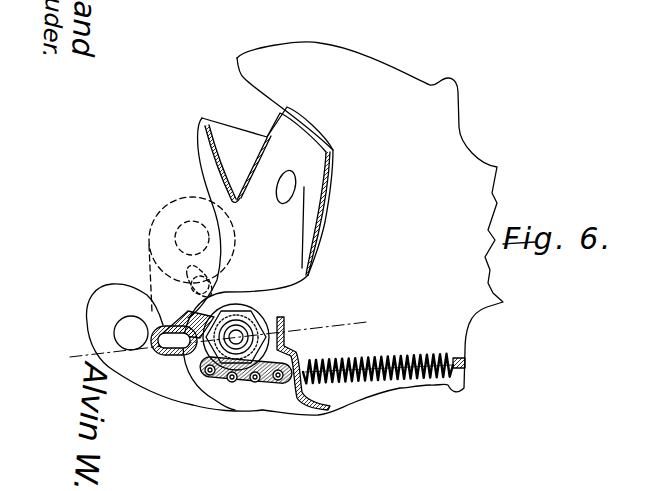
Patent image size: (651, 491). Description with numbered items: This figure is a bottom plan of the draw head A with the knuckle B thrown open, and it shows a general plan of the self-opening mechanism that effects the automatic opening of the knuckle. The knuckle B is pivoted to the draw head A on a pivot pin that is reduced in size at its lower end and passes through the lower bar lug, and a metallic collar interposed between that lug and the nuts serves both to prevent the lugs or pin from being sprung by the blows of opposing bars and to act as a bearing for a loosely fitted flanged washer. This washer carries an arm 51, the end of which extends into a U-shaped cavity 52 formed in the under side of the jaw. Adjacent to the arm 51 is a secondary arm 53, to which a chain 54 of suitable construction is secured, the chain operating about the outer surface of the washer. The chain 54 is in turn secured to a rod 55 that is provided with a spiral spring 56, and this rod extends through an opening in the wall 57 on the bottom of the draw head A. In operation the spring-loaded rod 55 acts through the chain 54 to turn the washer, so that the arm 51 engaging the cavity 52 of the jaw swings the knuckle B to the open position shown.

The draw head A is at (370, 228).
The knuckle B is at (173, 398).
The arm of flanged washer 51 is at (178, 341).
The U-shaped cavity 52 is at (157, 351).
The secondary arm 53 is at (215, 377).
The chain 54 is at (247, 392).
The rod 55 is at (464, 360).
The spiral spring 56 is at (428, 378).
The wall 57 is at (312, 273).